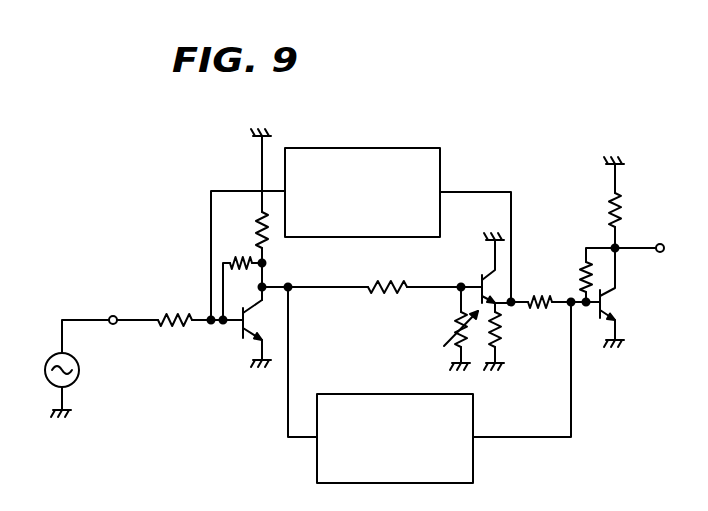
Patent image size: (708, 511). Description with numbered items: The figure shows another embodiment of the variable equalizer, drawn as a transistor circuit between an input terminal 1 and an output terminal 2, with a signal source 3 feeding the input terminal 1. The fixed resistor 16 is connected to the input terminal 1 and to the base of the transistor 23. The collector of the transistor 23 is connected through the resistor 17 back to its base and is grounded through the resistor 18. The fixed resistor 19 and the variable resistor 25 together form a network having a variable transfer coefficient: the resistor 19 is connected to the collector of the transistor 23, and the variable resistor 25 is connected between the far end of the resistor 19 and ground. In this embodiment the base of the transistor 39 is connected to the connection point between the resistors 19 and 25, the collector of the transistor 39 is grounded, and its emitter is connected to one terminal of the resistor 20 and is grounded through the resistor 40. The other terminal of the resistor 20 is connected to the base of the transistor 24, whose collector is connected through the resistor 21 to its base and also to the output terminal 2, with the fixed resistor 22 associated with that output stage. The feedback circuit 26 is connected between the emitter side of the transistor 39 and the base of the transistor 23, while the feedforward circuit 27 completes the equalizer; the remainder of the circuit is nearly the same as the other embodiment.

The input terminal 1 is at (114, 316).
The output terminal 2 is at (664, 248).
The signal source 3 is at (80, 375).
The fixed resistor 16 is at (158, 326).
The fixed resistor 17 is at (232, 263).
The fixed resistor 18 is at (257, 228).
The fixed resistor 19 is at (368, 293).
The fixed resistor 20 is at (545, 298).
The fixed resistor 21 is at (584, 262).
The fixed resistor 22 is at (624, 196).
The transistor 23 is at (242, 328).
The transistor 24 is at (607, 300).
The variable resistor 25 is at (457, 318).
The feedback circuit 26 is at (372, 148).
The feedforward circuit 27 is at (346, 394).
The transistor 39 is at (498, 288).
The resistor 40 is at (500, 320).